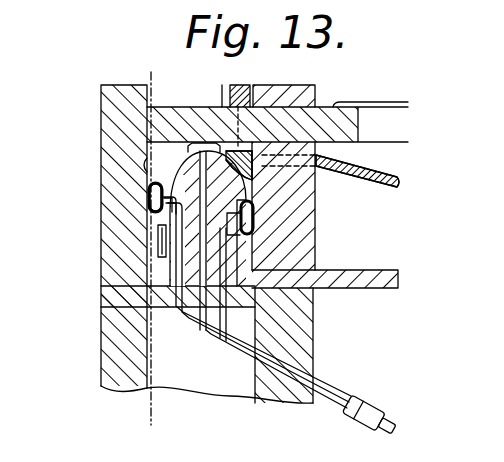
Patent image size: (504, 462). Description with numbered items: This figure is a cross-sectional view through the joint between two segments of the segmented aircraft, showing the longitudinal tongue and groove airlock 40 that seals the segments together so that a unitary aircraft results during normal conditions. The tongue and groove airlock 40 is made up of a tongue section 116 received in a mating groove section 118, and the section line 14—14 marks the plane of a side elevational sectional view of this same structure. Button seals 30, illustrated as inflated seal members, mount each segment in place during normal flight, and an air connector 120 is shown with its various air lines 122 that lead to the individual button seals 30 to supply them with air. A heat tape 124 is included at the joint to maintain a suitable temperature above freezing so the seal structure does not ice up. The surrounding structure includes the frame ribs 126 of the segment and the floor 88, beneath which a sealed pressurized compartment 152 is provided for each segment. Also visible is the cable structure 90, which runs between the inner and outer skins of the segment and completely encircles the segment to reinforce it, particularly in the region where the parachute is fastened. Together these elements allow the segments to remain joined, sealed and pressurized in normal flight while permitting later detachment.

The section line 14— 14 is at (196, 59).
The button seals 30 is at (258, 233).
The tongue and groove airlock 40 is at (165, 152).
The floor 88 is at (321, 107).
The cable structure 90 is at (338, 177).
The tongue section 116 is at (160, 241).
The groove section 118 is at (148, 175).
The air connector 120 is at (360, 397).
The air lines 122 is at (347, 389).
The heat tape 124 is at (158, 247).
The frame ribs 126 is at (167, 359).
The sealed pressurized compartment 152 is at (400, 265).